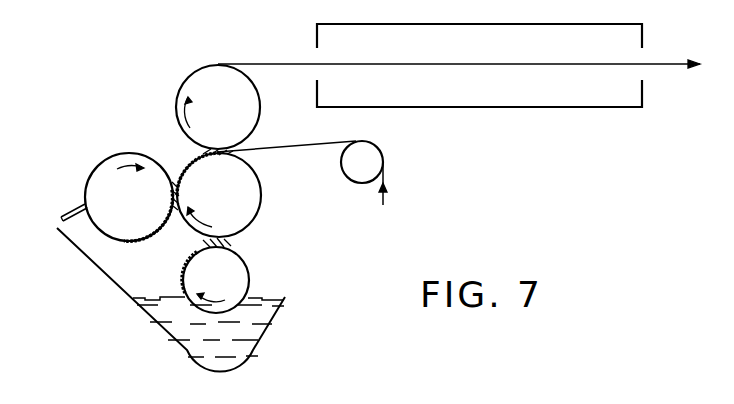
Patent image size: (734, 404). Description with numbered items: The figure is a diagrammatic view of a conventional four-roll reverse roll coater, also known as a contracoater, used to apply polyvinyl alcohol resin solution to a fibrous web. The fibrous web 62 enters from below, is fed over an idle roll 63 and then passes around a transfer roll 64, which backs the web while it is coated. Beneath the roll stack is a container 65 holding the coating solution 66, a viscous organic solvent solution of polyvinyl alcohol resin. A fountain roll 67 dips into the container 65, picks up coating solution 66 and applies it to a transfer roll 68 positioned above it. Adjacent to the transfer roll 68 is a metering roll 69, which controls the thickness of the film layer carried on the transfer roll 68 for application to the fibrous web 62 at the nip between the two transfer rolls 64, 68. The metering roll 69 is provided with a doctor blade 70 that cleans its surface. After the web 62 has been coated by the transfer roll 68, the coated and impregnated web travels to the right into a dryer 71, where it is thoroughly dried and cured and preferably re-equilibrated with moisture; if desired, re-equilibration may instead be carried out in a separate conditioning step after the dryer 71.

The fibrous web 62 is at (385, 196).
The idle roll 63 is at (360, 182).
The transfer roll 64 is at (258, 116).
The container 65 is at (240, 368).
The coating solution 66 is at (268, 297).
The fountain roll 67 is at (247, 265).
The transfer roll 68 is at (259, 194).
The metering roll 69 is at (102, 166).
The doctor blade 70 is at (62, 208).
The dryer 71 is at (400, 107).